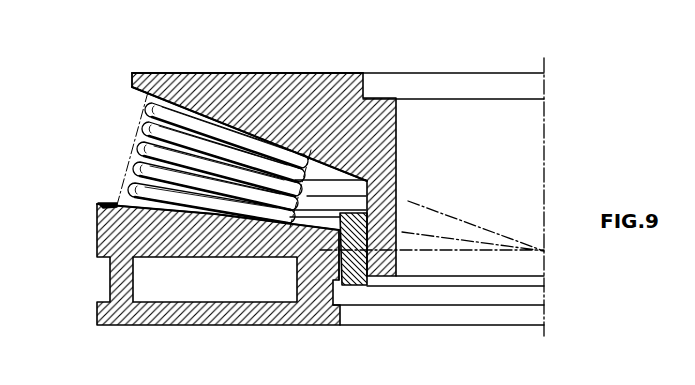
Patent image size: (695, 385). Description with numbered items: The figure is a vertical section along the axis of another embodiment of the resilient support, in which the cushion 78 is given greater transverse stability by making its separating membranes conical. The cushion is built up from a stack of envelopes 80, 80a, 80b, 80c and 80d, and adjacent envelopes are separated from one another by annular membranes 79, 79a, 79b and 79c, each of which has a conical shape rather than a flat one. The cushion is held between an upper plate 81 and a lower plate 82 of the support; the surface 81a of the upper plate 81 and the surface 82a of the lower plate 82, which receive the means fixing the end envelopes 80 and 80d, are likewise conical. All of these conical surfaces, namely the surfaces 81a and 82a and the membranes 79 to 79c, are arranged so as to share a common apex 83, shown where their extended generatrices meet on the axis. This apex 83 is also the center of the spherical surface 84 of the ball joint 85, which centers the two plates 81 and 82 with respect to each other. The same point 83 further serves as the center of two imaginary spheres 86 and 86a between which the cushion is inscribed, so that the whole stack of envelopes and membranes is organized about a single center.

The cushion 78 is at (124, 147).
The annular membrane 79 is at (143, 107).
The annular membrane 79a is at (134, 128).
The annular membrane 79b is at (136, 154).
The annular membrane 79c is at (128, 193).
The end envelope 80 is at (210, 122).
The envelope 80a is at (222, 150).
The envelope 80b is at (270, 150).
The envelope 80c is at (210, 190).
The end envelope 80d is at (256, 212).
The upper plate 81 is at (380, 138).
The conical surface of upper plate 81a is at (140, 92).
The lower plate 82 is at (330, 305).
The conical surface of lower plate 82a is at (98, 214).
The common apex 83 is at (549, 260).
The spherical surface 84 is at (334, 266).
The ball joint 85 is at (356, 268).
The imaginary sphere 86 is at (160, 72).
The imaginary sphere 86a is at (369, 73).